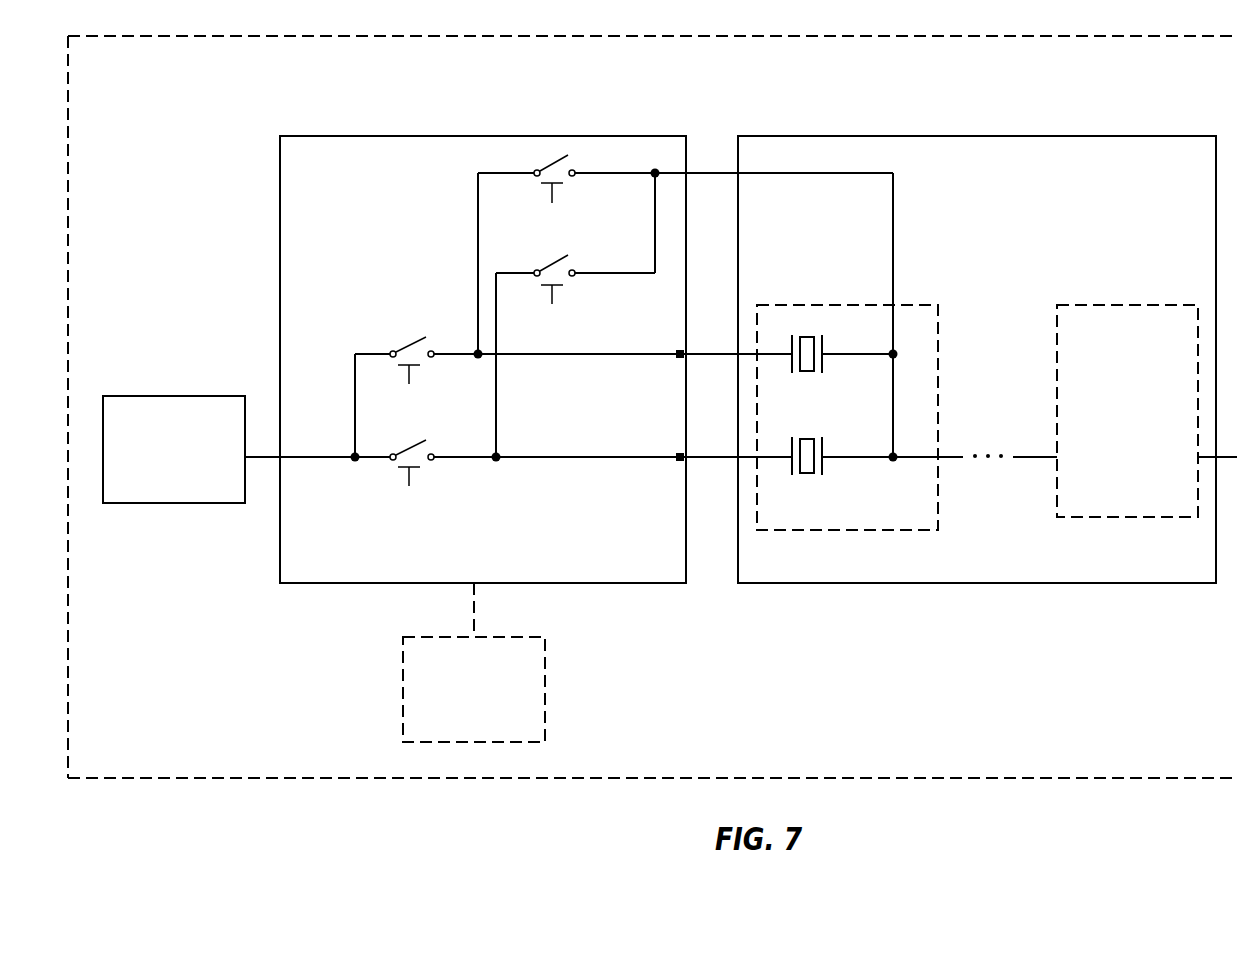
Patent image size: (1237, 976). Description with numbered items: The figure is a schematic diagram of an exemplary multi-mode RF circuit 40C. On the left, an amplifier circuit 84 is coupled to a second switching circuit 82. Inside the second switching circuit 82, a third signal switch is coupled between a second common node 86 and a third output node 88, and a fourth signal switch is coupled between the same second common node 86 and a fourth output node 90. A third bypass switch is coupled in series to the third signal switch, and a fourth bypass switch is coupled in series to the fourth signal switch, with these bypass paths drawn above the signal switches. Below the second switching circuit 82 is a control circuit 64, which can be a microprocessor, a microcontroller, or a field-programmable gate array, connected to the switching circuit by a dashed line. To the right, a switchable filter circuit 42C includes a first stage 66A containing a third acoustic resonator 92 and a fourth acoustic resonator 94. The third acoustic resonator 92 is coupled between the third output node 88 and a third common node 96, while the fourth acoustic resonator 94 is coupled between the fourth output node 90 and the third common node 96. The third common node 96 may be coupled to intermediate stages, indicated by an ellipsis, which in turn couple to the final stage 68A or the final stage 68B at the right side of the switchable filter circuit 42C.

The multi-mode RF circuit 40C is at (365, 82).
The second switching circuit 82 is at (320, 168).
The switchable filter circuit 42C is at (1195, 170).
The amplifier circuit 84 is at (187, 480).
The second common node 86 is at (352, 461).
The third output node 88 is at (677, 463).
The fourth output node 90 is at (677, 360).
The third acoustic resonator 92 is at (823, 450).
The fourth acoustic resonator 94 is at (823, 347).
The third common node 96 is at (893, 461).
The first stage 66A is at (925, 524).
The final stage 68A is at (1108, 344).
The final stage 68B is at (1158, 344).
The control circuit 64 is at (487, 722).